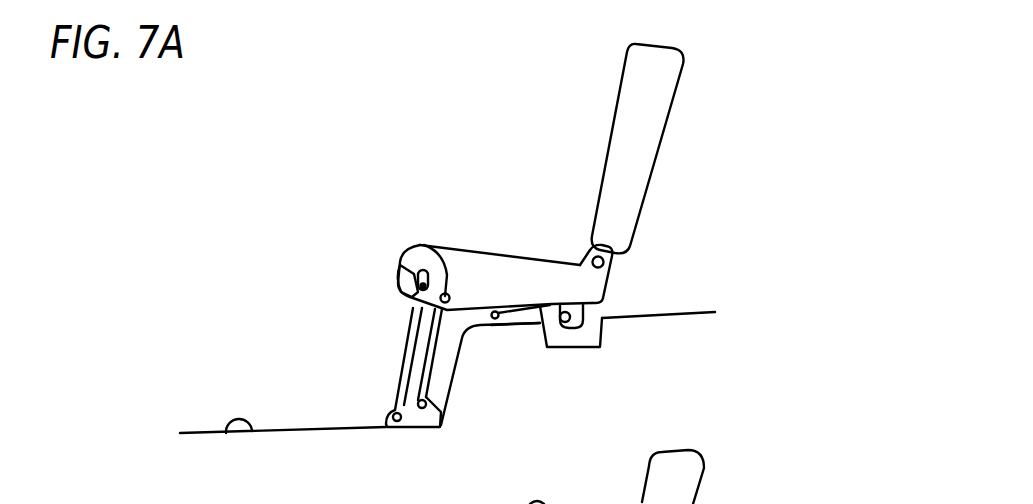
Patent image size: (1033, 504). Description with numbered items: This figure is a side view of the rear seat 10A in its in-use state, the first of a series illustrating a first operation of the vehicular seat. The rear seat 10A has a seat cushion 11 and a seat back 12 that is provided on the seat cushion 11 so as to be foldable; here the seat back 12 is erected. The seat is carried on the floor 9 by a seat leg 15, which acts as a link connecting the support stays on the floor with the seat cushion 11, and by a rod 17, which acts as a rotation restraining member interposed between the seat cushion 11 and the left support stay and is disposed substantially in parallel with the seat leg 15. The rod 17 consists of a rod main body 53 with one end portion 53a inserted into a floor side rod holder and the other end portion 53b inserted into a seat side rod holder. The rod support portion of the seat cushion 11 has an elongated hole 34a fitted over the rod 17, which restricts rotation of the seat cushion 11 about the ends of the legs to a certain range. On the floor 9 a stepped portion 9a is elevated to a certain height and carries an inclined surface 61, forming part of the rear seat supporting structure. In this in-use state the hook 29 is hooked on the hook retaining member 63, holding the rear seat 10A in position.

The rear seat 10A is at (740, 62).
The seat back 12 is at (612, 108).
The seat cushion 11 is at (515, 235).
The elongated hole 34a is at (400, 276).
The other end portion of rod main body 53b is at (400, 300).
The rod 17 is at (395, 330).
The rod main body 53 is at (405, 368).
The one end portion of rod main body 53a is at (397, 425).
The seat leg 15 is at (448, 373).
The inclined surface 61 is at (493, 323).
The hook 29 is at (603, 327).
The hook retaining member 63 is at (563, 312).
The stepped portion 9a is at (687, 312).
The floor 9 is at (226, 433).